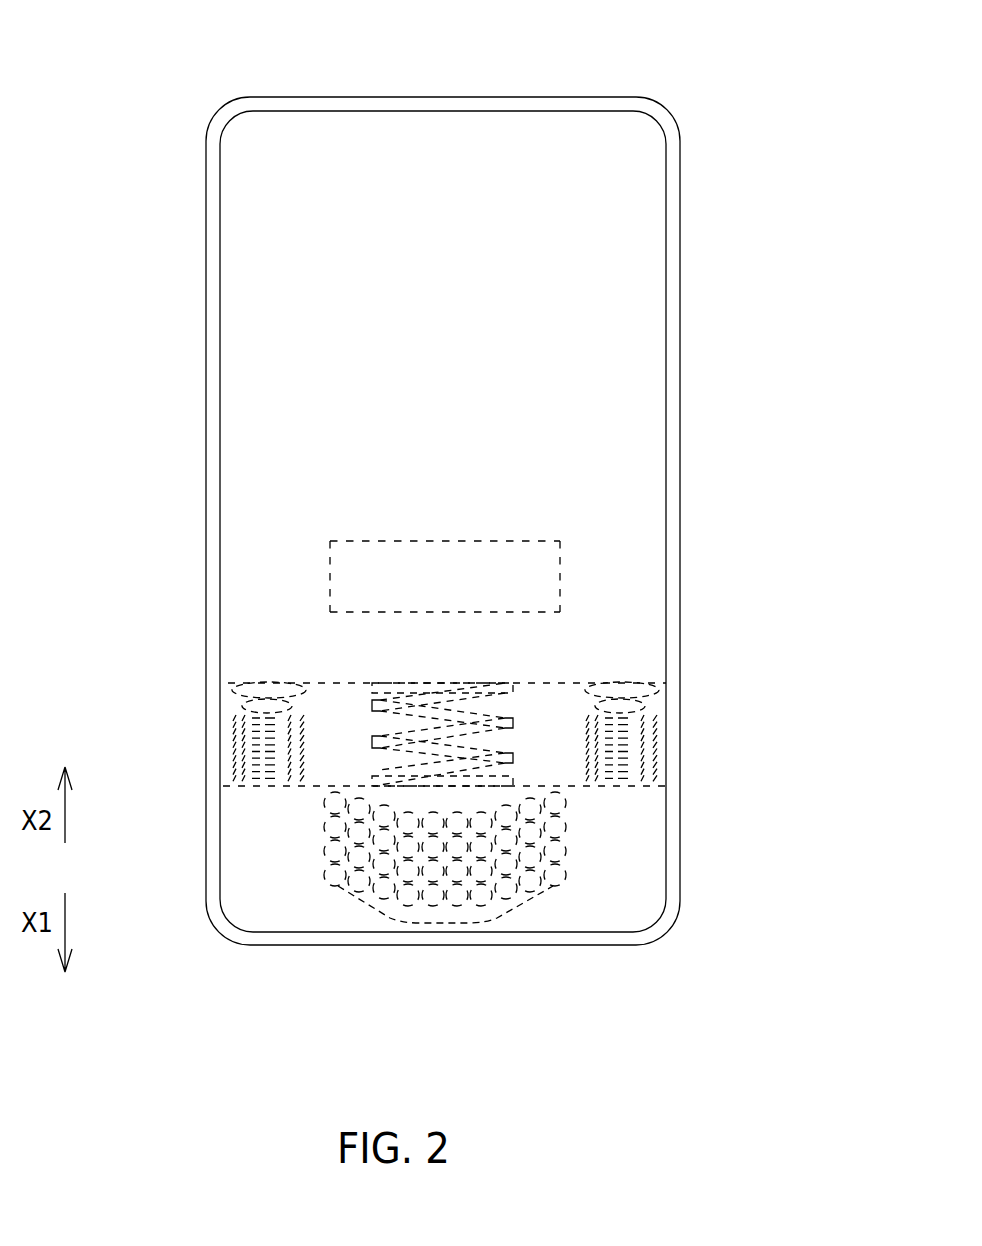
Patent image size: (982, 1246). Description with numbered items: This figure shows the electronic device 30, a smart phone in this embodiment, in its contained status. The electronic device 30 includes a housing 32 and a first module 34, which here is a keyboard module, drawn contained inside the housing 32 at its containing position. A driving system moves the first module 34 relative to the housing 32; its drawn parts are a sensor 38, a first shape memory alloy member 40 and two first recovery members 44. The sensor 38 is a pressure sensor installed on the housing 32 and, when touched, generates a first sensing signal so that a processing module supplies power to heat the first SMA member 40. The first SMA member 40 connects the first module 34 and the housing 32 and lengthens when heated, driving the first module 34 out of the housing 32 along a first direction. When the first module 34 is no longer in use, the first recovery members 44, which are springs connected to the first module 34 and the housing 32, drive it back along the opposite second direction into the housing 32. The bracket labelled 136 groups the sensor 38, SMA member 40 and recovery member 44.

The electronic device 30 is at (681, 93).
The housing 32 is at (680, 233).
The first module 34 is at (638, 889).
The sensor 38 is at (555, 582).
The first shape memory alloy member 40 is at (503, 728).
The first recovery member 44 is at (240, 695).
The vibration assembly 136 is at (737, 540).